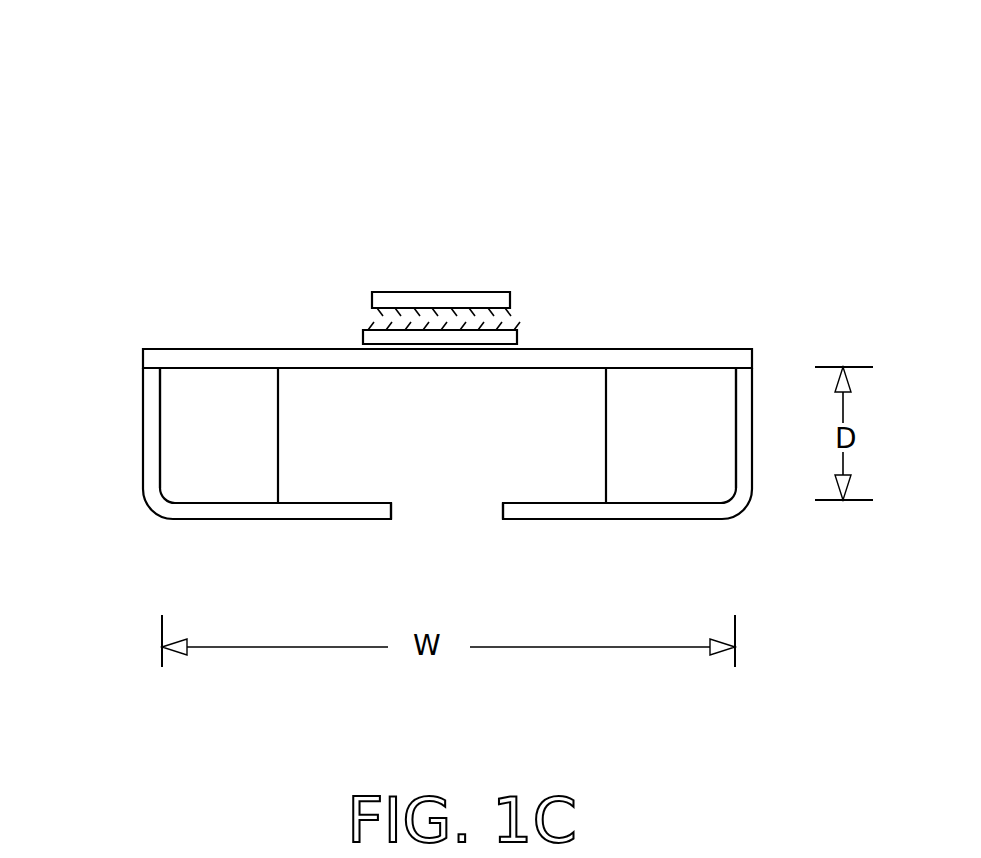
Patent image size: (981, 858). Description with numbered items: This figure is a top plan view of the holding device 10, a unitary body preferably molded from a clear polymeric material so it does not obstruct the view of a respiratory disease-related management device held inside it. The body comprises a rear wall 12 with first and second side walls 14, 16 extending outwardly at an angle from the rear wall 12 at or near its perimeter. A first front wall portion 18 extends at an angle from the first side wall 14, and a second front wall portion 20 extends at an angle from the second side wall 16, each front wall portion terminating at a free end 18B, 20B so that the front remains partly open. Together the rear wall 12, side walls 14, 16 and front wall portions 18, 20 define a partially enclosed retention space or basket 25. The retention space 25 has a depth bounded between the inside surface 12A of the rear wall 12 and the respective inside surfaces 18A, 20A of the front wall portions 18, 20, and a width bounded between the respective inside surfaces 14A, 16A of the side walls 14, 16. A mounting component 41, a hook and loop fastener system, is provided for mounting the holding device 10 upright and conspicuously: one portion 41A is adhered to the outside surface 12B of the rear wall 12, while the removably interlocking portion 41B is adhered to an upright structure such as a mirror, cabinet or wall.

The holding device 10 is at (810, 108).
The rear wall 12 is at (143, 358).
The inside surface of rear wall 12A is at (203, 375).
The outside surface of rear wall 12B is at (237, 349).
The first side wall 14 is at (150, 445).
The inside surface of first side wall 14A is at (160, 411).
The second side wall 16 is at (745, 440).
The inside surface of second side wall 16A is at (737, 403).
The first front wall portion 18 is at (165, 507).
The inside surface of first front wall portion 18A is at (210, 504).
The end of left flange 18B is at (392, 507).
The second front wall portion 20 is at (738, 500).
The inside surface of second front wall portion 20A is at (678, 500).
The end of right flange 20B is at (503, 505).
The retention space 25 is at (456, 451).
The mounting component 41 is at (461, 282).
The portion of mounting component 41A is at (520, 332).
The removably interlocking portion of mounting component 41B is at (510, 296).